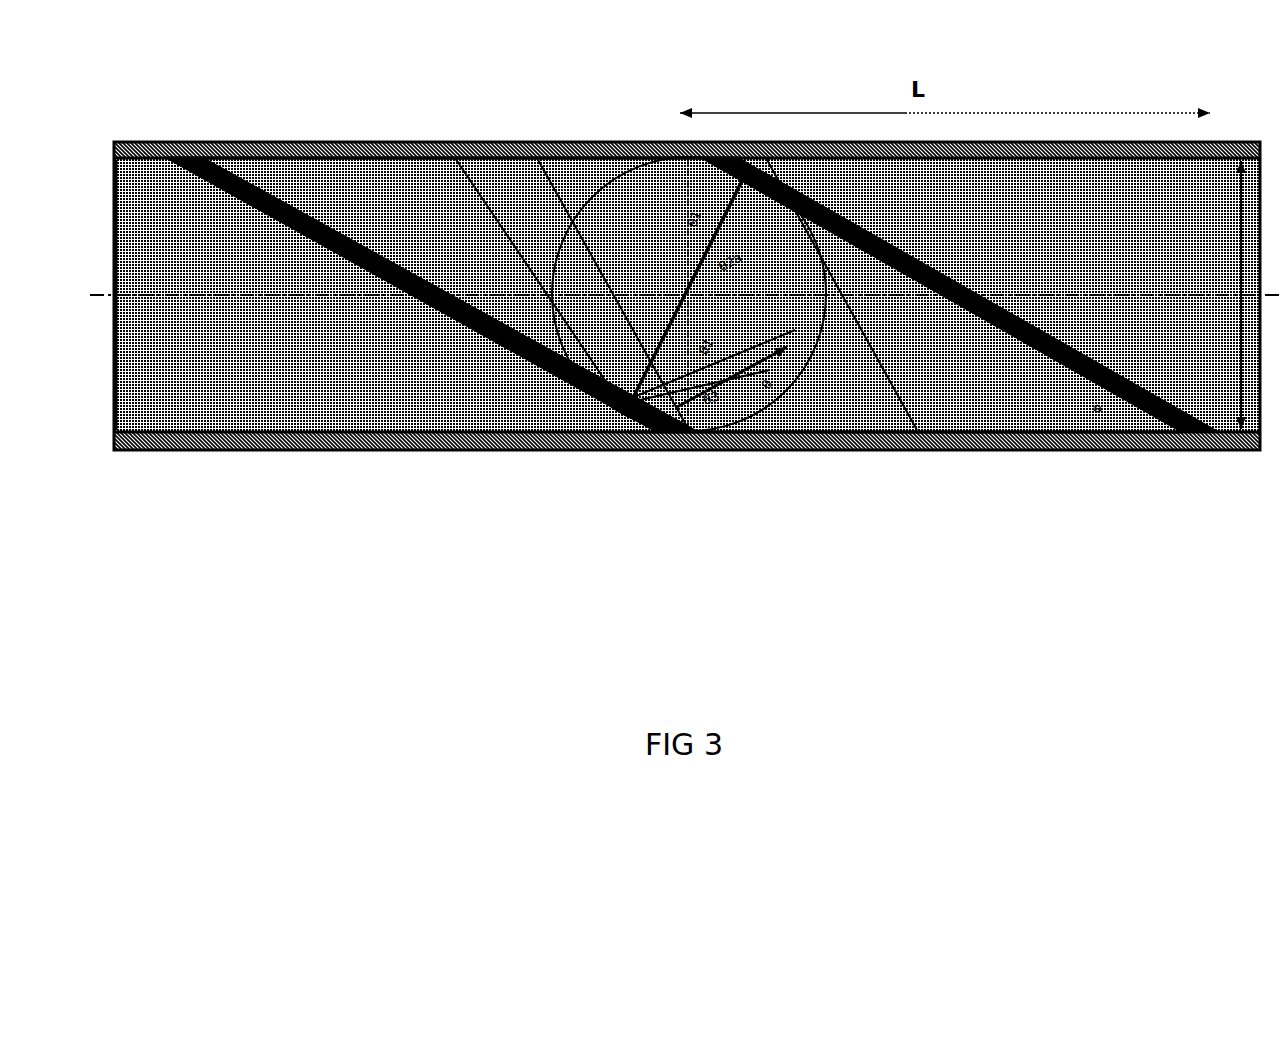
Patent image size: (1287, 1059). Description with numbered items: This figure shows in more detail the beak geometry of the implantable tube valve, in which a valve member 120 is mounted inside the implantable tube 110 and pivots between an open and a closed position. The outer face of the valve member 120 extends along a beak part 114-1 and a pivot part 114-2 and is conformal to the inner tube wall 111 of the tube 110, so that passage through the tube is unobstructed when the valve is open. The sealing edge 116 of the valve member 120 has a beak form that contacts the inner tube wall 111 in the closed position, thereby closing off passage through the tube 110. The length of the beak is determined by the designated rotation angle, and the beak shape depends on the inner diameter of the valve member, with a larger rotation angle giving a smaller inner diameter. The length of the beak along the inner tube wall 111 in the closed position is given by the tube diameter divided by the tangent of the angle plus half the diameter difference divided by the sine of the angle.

The tube 110 is at (687, 381).
The inner tube wall 111 is at (181, 424).
The beak part 114-1 is at (686, 433).
The pivot part 114-2 is at (397, 157).
The sealing edge 116 is at (976, 388).
The valve member 120 is at (432, 363).